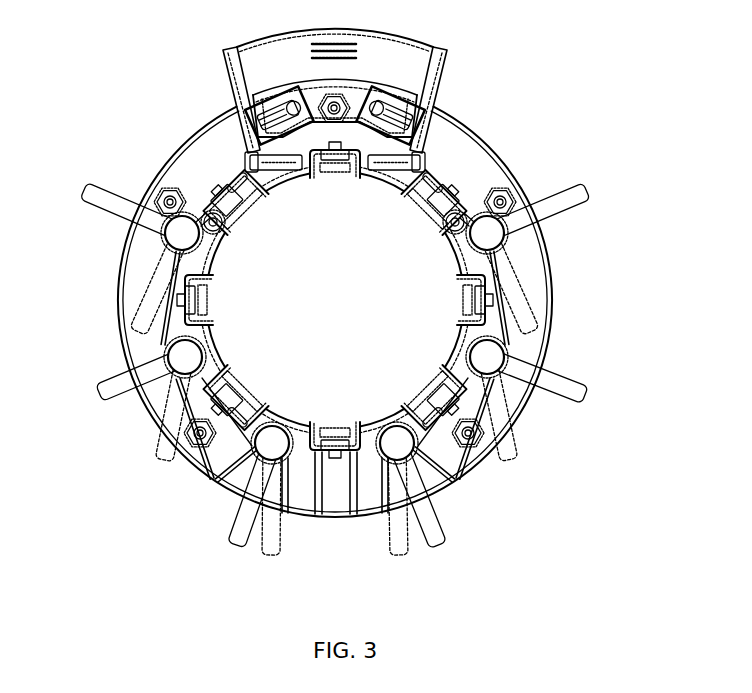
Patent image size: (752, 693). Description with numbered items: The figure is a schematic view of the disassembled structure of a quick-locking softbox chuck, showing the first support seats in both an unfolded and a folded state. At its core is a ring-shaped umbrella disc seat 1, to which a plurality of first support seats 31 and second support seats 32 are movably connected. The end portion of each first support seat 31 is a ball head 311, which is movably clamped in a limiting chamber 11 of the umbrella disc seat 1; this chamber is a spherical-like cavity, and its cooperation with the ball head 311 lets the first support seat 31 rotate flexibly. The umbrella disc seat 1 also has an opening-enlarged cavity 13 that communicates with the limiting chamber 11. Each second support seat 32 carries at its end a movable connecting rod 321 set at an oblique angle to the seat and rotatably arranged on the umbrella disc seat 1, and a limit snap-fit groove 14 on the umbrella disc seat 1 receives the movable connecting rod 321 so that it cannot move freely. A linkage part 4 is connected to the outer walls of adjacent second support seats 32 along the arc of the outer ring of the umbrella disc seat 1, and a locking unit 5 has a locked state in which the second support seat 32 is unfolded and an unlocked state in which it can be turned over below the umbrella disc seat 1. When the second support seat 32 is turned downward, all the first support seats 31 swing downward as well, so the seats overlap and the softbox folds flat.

The umbrella disc seat 1 is at (140, 270).
The linkage part 4 is at (400, 57).
The second support seat 32 is at (232, 69).
The locking unit 5 is at (412, 103).
The movable connecting rod 321 is at (252, 157).
The limit snap-fit groove 14 is at (430, 157).
The ball head 311 is at (503, 195).
The first support seat 31 is at (553, 212).
The limiting chamber 11 is at (418, 444).
The opening-enlarged cavity 13 is at (431, 476).